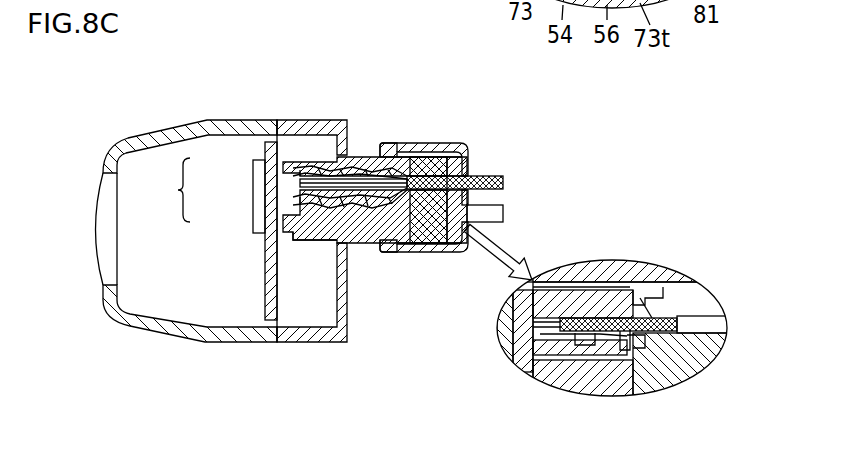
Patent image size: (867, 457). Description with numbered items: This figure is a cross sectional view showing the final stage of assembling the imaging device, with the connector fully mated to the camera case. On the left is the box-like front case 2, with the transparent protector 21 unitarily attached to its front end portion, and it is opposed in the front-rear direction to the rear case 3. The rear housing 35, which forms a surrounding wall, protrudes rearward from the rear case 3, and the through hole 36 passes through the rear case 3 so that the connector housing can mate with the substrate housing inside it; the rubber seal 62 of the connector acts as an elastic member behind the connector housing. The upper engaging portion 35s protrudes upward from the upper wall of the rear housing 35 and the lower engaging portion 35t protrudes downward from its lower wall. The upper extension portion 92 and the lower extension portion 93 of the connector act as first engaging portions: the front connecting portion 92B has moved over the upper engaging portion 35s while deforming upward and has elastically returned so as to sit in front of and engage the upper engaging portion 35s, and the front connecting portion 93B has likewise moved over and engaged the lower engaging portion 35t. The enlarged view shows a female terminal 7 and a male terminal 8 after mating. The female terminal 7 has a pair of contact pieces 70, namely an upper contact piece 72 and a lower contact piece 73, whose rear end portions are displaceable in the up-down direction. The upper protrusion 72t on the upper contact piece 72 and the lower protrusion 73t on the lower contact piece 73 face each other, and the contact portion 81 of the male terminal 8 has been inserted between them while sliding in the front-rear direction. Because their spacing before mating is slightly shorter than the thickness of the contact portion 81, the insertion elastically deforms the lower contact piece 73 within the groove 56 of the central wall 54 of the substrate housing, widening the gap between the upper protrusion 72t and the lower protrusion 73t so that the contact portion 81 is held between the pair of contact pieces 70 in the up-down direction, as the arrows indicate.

The front case 2 is at (183, 116).
The rear case 3 is at (336, 117).
The female terminal 7 is at (265, 237).
The male terminal 8 is at (310, 236).
The protector 21 is at (103, 232).
The rear housing 35 is at (366, 150).
The upper engaging portion 35s is at (407, 155).
The lower engaging portion 35t is at (402, 250).
The through hole 36 is at (345, 244).
The rubber seal 62 is at (452, 194).
The pair of contact pieces 70 is at (166, 190).
The upper contact piece 72 is at (293, 174).
The upper protrusion 72t is at (640, 297).
The lower contact piece 73 is at (293, 203).
The lower protrusion 73t is at (633, 340).
The contact portion 81 is at (690, 345).
The central wall 54 is at (585, 338).
The groove 56 is at (627, 337).
The upper extension portion 92 is at (455, 142).
The front connecting portion 92B is at (387, 144).
The lower extension portion 93 is at (442, 256).
The front connecting portion 93B is at (385, 250).